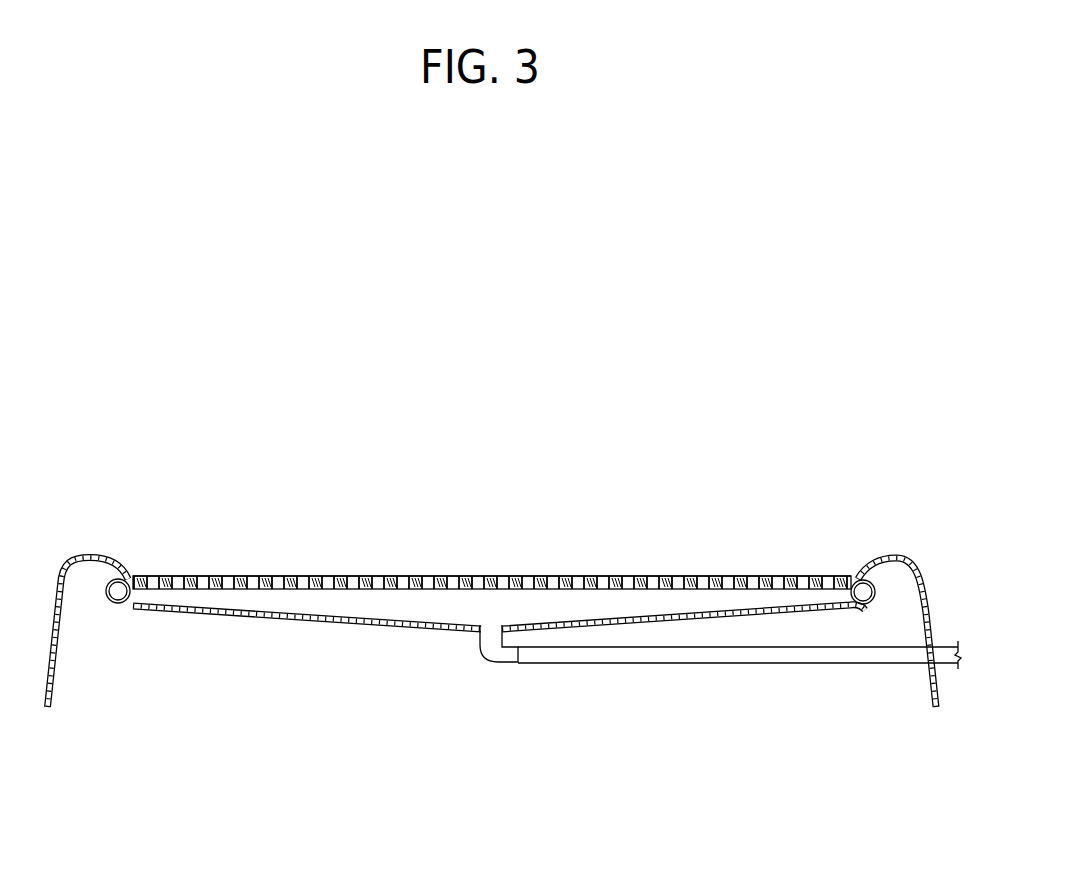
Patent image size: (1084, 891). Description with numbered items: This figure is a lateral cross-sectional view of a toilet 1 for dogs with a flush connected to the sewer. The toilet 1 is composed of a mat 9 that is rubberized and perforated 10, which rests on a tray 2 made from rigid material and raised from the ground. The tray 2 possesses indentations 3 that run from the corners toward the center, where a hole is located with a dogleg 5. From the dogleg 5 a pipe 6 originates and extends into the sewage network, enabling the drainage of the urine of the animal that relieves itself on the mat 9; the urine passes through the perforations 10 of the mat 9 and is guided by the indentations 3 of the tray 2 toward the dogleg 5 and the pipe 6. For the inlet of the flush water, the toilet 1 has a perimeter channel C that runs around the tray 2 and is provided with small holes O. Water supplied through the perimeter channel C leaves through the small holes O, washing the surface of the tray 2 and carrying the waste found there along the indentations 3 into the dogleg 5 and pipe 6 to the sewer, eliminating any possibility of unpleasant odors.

The toilet 1 is at (492, 489).
The tray 2 is at (872, 557).
The indentations 3 is at (263, 620).
The dogleg 5 is at (493, 655).
The pipe 6 is at (663, 657).
The mat 9 is at (267, 577).
The perforations 10 is at (553, 580).
The perimeter channel C is at (118, 603).
The small holes O is at (136, 613).